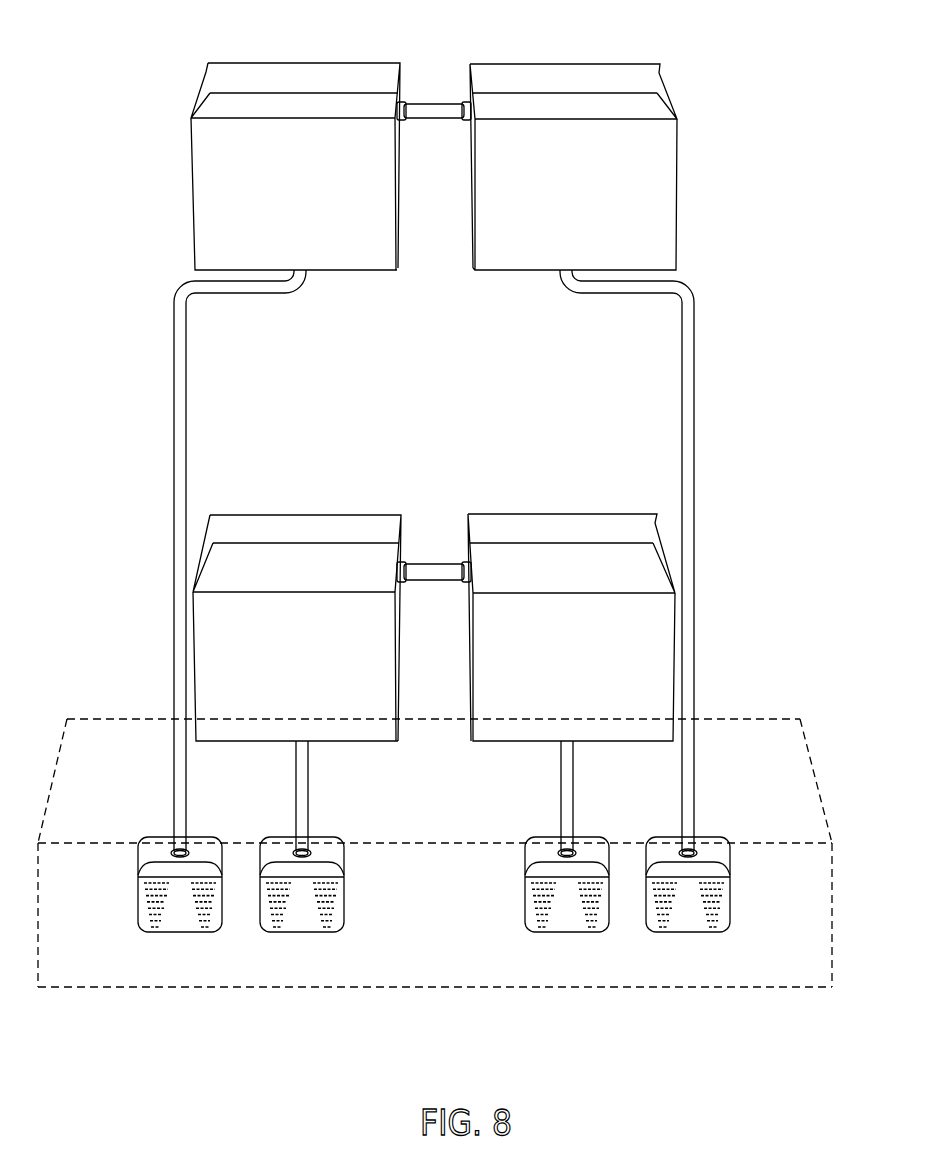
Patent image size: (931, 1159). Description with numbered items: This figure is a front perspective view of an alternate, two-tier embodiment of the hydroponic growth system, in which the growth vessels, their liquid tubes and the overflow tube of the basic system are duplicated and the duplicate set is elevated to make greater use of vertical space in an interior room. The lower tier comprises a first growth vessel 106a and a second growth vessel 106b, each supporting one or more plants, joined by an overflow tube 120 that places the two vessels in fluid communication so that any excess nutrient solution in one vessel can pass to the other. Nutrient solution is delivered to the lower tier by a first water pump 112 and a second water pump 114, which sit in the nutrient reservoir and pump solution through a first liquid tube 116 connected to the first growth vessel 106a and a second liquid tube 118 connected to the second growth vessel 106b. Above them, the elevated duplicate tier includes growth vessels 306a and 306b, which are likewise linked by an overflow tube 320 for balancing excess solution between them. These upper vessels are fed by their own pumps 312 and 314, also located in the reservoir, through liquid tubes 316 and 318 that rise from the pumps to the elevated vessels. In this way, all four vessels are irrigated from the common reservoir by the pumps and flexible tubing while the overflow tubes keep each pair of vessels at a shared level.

The growth vessel 306a is at (297, 77).
The growth vessel 306b is at (561, 77).
The overflow tube 320 is at (436, 102).
The liquid tube 316 is at (174, 398).
The liquid tube 318 is at (697, 398).
The first growth vessel 106a is at (303, 525).
The second growth vessel 106b is at (562, 523).
The overflow tube 120 is at (437, 562).
The first liquid tube 116 is at (308, 785).
The second liquid tube 118 is at (566, 787).
The pump 312 is at (180, 925).
The first water pump 112 is at (302, 925).
The second water pump 114 is at (563, 925).
The pump 314 is at (690, 925).